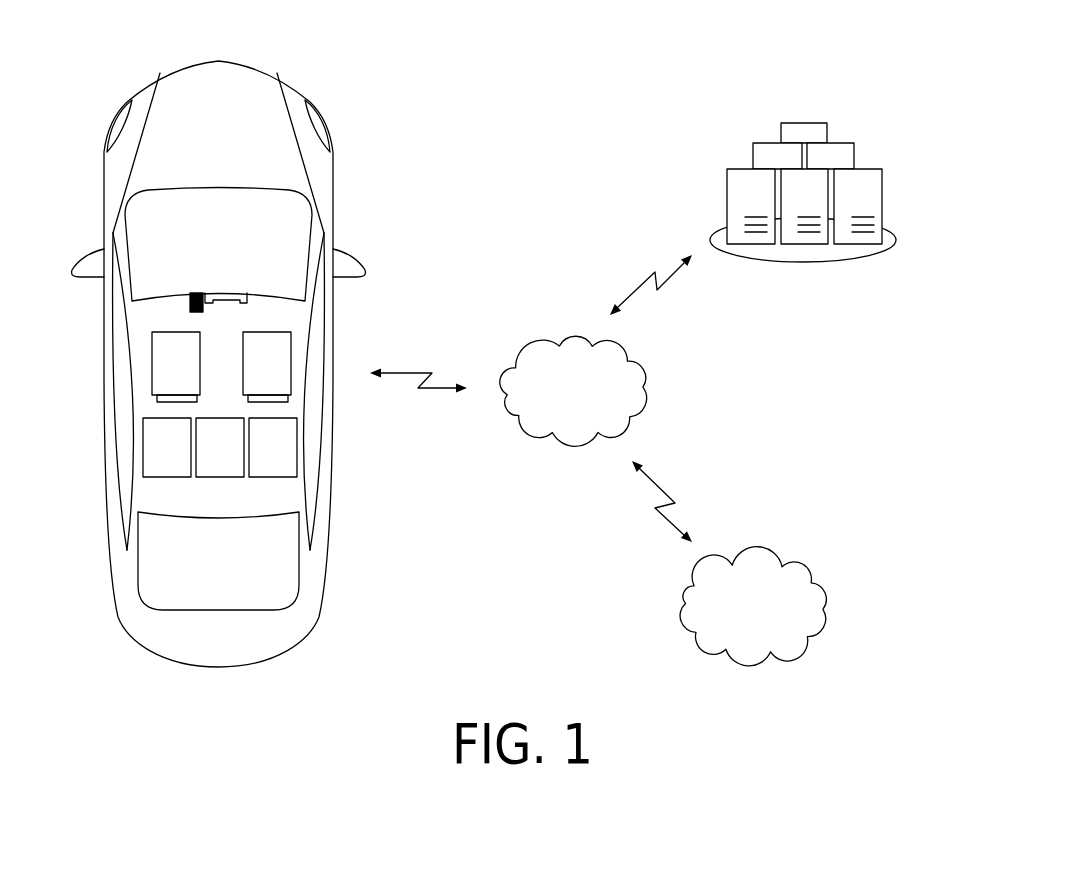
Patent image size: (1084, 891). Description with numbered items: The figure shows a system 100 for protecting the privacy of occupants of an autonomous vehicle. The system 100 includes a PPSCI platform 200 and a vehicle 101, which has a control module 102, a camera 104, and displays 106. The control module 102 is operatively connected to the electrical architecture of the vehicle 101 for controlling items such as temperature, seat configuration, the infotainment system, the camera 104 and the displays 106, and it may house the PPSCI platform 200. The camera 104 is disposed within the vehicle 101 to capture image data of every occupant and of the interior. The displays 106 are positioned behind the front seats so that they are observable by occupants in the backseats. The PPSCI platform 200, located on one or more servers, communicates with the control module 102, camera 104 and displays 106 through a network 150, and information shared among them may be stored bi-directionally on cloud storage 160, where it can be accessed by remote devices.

The system 100 is at (636, 90).
The vehicle 101 is at (92, 91).
The control module 102 is at (230, 293).
The camera 104 is at (195, 293).
The display 106 is at (195, 393).
The network 150 is at (573, 391).
The cloud storage 160 is at (753, 606).
The PPSCI platform 200 is at (882, 169).